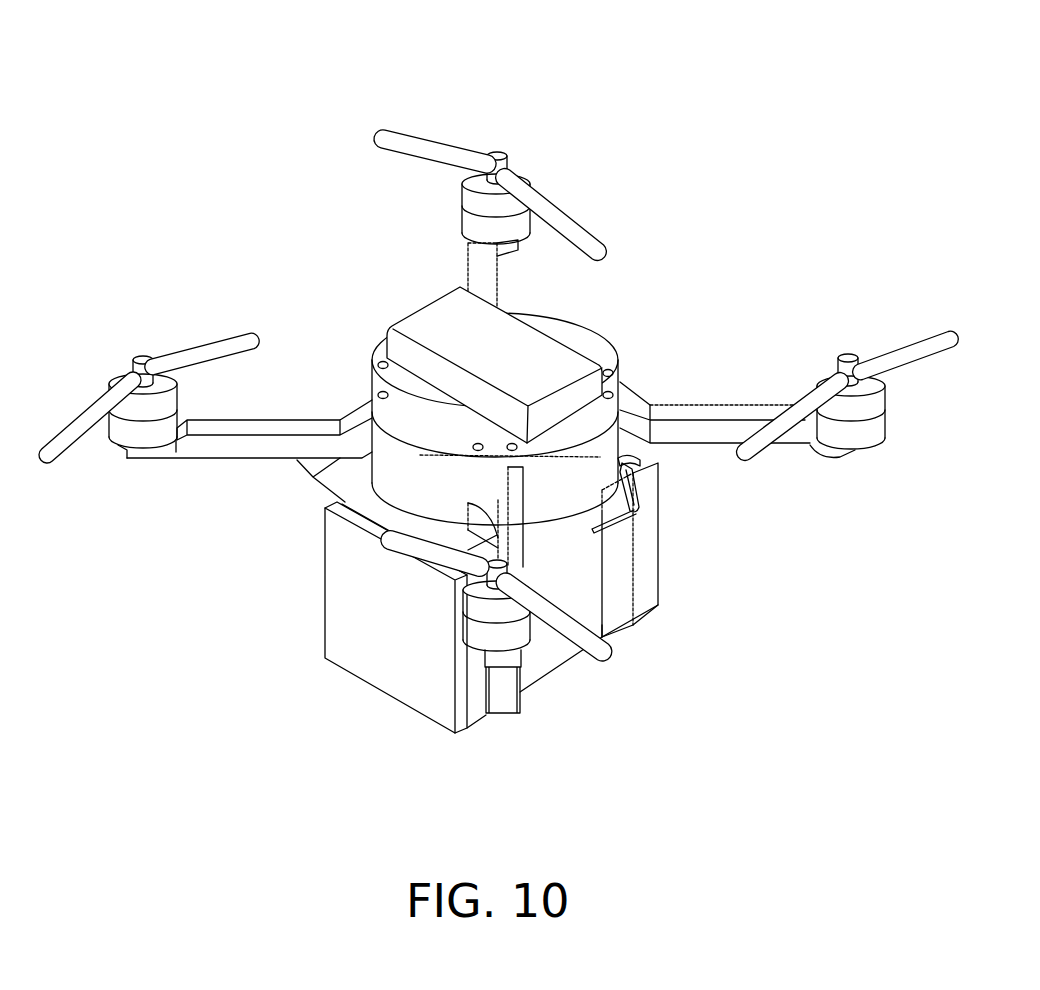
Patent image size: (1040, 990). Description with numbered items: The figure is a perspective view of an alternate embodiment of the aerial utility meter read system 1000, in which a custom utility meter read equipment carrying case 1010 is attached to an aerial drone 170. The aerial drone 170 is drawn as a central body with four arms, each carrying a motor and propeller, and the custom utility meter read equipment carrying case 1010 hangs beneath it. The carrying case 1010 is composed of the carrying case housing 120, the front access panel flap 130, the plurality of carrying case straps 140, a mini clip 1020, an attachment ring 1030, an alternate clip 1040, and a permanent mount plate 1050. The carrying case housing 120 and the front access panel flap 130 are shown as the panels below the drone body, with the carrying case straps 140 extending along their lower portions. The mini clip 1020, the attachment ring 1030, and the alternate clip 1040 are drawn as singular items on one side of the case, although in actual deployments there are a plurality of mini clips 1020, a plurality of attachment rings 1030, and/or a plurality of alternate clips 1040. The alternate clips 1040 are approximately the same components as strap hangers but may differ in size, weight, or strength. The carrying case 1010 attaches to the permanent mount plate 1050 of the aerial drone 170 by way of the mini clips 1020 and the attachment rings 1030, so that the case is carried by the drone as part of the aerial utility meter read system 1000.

The aerial utility meter read system 1000 is at (243, 118).
The custom utility meter read equipment carrying case 1010 is at (280, 518).
The carrying case housing 120 is at (653, 587).
The front access panel flap 130 is at (332, 568).
The carrying case straps 140 is at (622, 626).
The aerial drone 170 is at (605, 343).
The mini clip 1020 is at (635, 540).
The attachment ring 1030 is at (632, 463).
The alternate clip 1040 is at (640, 493).
The permanent mount plate 1050 is at (313, 477).